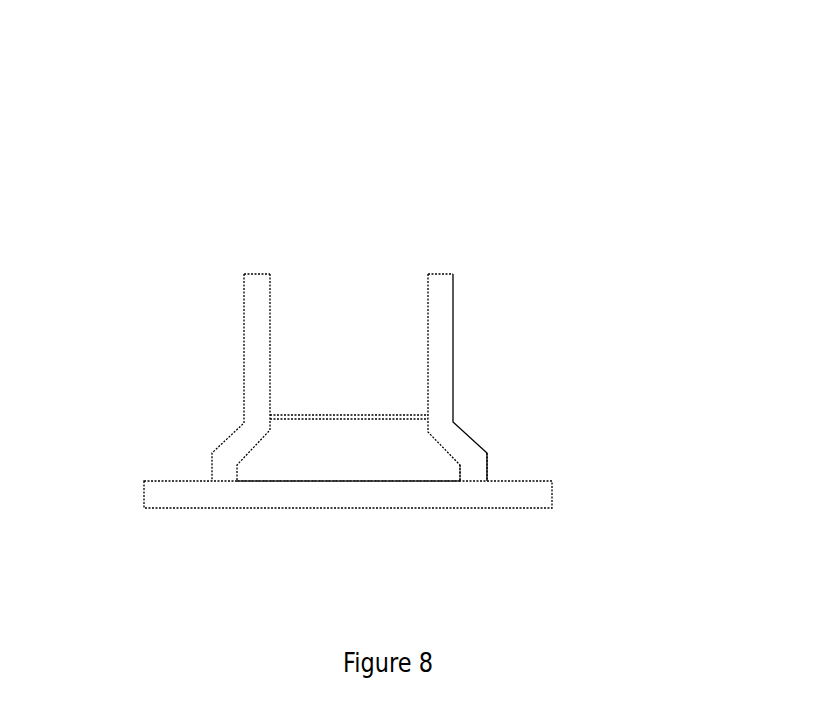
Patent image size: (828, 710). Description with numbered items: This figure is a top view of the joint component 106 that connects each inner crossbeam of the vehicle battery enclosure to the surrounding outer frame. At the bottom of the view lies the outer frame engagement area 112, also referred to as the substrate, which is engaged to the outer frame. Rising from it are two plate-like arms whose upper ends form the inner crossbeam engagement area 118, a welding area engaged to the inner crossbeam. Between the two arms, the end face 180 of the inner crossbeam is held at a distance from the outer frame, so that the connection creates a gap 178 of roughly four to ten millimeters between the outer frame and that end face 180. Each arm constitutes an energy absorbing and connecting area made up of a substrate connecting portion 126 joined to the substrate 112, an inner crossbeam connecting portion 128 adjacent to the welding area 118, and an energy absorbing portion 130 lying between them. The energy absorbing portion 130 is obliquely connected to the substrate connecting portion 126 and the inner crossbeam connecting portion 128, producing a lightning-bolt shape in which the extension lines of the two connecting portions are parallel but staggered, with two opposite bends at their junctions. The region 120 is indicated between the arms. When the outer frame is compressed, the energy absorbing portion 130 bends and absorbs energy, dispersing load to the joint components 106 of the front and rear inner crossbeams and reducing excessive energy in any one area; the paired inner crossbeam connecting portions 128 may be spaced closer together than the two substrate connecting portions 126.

The joint component 106 is at (513, 173).
The outer frame engagement area 112 is at (180, 500).
The inner crossbeam engagement area 118 is at (438, 280).
The gap 120 is at (495, 434).
The substrate connecting portion 126 is at (477, 470).
The inner crossbeam connecting portion 128 is at (440, 388).
The energy absorbing portion 130 is at (463, 443).
The gap 178 is at (312, 447).
The end face 180 is at (342, 415).